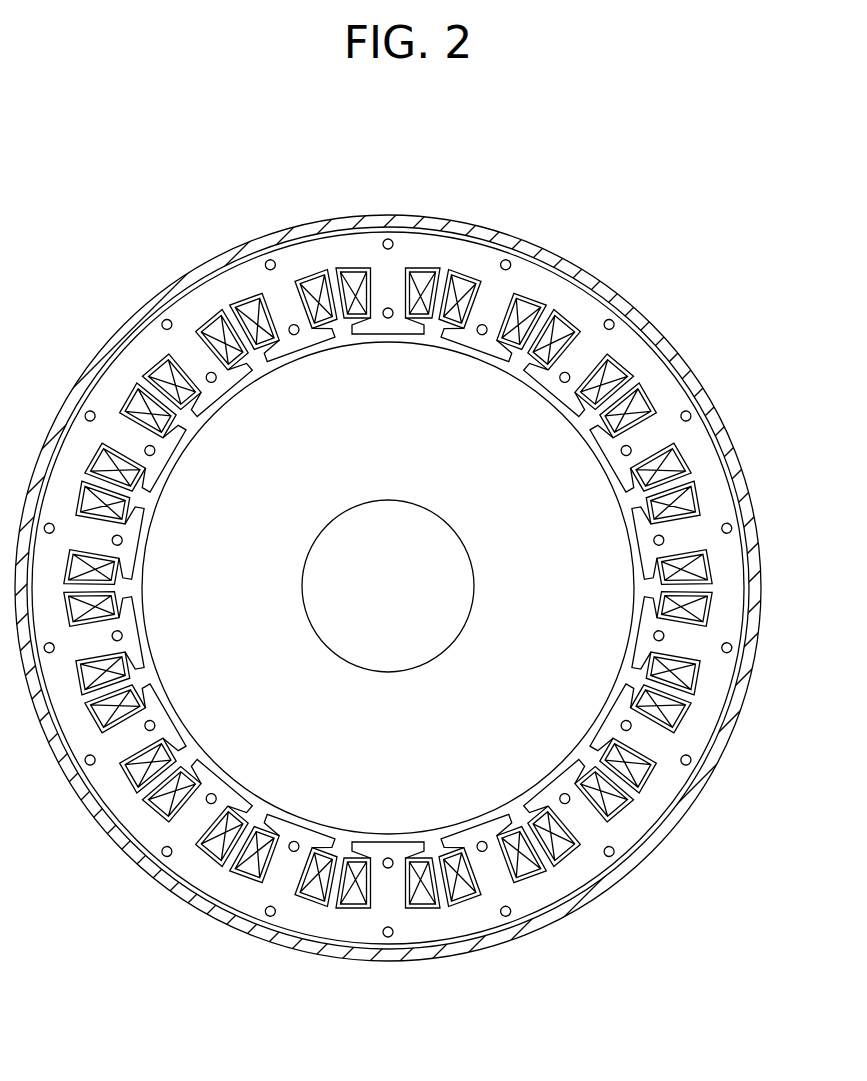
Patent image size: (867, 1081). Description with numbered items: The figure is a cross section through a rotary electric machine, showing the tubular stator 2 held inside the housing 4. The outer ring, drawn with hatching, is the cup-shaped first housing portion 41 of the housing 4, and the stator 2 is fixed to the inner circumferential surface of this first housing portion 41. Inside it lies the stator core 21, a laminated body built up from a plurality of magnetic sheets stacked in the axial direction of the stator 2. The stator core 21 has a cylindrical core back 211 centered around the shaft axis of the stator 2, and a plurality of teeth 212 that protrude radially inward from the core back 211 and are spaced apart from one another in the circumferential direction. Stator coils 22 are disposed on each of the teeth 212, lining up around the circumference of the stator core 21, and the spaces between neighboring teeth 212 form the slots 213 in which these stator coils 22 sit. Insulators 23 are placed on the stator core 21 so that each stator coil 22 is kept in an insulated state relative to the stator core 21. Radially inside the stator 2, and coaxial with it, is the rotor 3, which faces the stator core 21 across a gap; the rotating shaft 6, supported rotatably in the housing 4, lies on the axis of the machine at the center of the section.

The stator 2 is at (388, 532).
The stator core 21 is at (388, 544).
The core back 211 is at (573, 297).
The teeth 212 is at (468, 334).
The slots 213 is at (531, 334).
The stator coils 22 is at (232, 314).
The insulators 23 is at (313, 272).
The rotor 3 is at (427, 345).
The housing 4 is at (433, 572).
The first housing portion 41 is at (668, 831).
The rotating shaft 6 is at (433, 630).